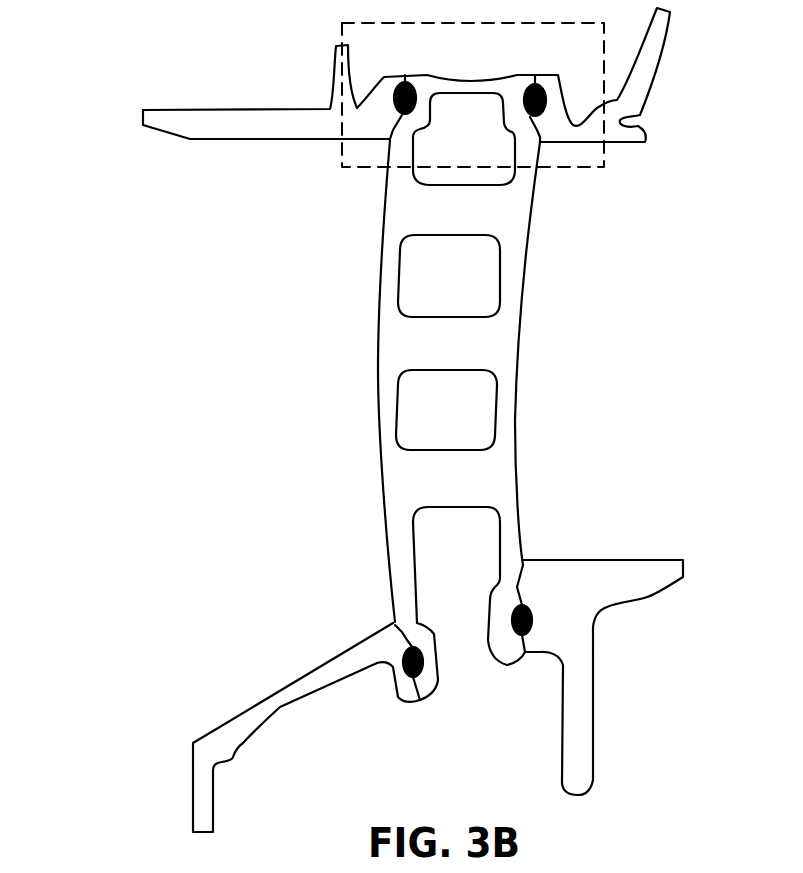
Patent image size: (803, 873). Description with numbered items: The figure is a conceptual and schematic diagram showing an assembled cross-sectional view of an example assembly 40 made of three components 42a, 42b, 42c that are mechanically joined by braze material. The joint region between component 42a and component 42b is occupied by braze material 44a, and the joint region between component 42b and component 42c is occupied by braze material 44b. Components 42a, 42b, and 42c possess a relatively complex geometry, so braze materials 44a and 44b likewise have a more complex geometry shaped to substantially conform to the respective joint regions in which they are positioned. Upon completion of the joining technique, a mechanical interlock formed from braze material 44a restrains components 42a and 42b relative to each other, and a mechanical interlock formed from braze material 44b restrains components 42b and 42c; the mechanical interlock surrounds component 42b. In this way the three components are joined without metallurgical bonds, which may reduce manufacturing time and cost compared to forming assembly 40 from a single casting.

The assembly 40 is at (87, 52).
The component 42a is at (242, 110).
The component 42b is at (378, 372).
The component 42c is at (280, 685).
The braze material 44a is at (543, 108).
The braze material 44b is at (530, 607).